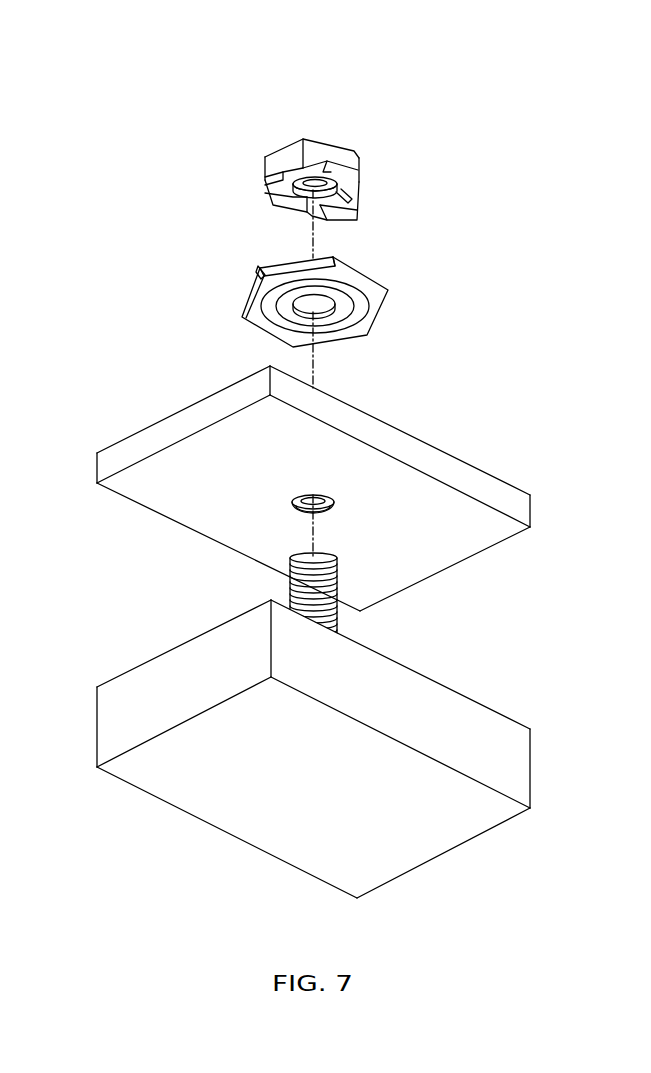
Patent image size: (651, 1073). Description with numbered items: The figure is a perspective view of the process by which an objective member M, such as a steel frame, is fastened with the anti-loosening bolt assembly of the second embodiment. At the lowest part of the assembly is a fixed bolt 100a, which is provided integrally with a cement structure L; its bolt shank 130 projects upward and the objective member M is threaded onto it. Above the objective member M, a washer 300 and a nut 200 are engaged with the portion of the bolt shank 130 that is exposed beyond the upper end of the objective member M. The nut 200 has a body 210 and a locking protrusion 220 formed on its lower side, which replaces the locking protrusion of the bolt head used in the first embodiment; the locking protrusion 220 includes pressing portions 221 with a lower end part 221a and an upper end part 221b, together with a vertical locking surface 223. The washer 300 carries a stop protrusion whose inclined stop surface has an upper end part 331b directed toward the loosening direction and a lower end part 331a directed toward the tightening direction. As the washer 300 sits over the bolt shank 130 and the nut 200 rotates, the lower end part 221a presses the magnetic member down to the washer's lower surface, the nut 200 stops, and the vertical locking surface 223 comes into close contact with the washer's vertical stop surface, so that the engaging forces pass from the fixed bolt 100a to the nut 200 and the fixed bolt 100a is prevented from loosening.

The nut 200 is at (229, 167).
The nut body 210 is at (337, 183).
The locking protrusion 220 is at (429, 183).
The pressing tab 221 is at (331, 217).
The lower end part 221a is at (265, 183).
The second locking tab 221b is at (323, 170).
The vertical locking surface 223 is at (338, 196).
The washer 300 is at (229, 294).
The lower end part of the inclined stop surface 331a is at (263, 270).
The upper end part of the inclined stop surface 331b is at (336, 258).
The objective member M is at (453, 461).
The cement structure L is at (473, 699).
The bolt shank 130 is at (291, 595).
The fixed bolt 100a is at (346, 591).